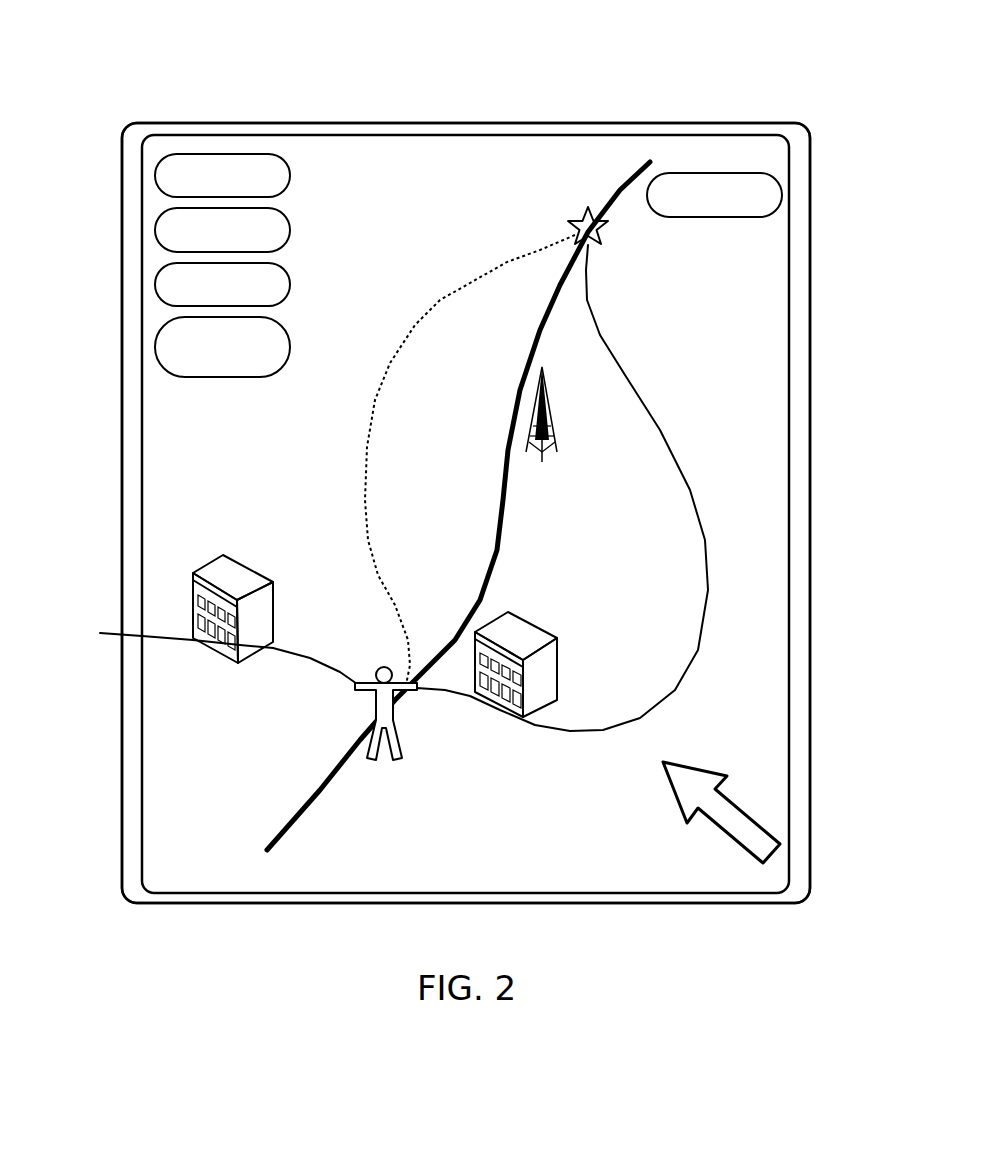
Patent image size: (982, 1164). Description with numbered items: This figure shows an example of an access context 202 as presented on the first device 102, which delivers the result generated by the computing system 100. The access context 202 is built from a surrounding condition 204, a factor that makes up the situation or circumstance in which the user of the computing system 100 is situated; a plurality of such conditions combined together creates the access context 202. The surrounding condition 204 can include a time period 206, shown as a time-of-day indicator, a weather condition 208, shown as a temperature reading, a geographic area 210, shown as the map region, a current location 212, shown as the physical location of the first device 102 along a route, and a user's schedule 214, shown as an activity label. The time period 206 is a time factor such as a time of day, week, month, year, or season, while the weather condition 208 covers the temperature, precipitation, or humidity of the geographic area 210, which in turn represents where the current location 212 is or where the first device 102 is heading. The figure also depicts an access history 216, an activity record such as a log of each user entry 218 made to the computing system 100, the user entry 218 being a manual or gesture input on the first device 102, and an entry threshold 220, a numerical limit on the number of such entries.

The computing system 100 is at (158, 62).
The first device 102 is at (788, 112).
The access context 202 is at (685, 120).
The surrounding condition 204 is at (240, 588).
The time period 206 is at (173, 178).
The weather condition 208 is at (173, 242).
The geographic area 210 is at (521, 162).
The current location 212 is at (380, 502).
The user's schedule 214 is at (172, 290).
The access history 216 is at (172, 350).
The user entry 218 is at (730, 815).
The entry threshold 220 is at (782, 196).